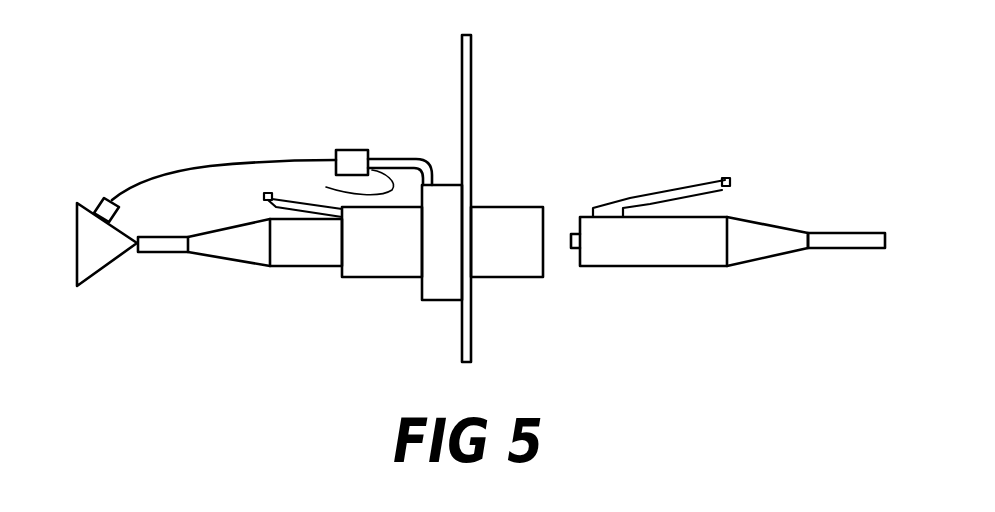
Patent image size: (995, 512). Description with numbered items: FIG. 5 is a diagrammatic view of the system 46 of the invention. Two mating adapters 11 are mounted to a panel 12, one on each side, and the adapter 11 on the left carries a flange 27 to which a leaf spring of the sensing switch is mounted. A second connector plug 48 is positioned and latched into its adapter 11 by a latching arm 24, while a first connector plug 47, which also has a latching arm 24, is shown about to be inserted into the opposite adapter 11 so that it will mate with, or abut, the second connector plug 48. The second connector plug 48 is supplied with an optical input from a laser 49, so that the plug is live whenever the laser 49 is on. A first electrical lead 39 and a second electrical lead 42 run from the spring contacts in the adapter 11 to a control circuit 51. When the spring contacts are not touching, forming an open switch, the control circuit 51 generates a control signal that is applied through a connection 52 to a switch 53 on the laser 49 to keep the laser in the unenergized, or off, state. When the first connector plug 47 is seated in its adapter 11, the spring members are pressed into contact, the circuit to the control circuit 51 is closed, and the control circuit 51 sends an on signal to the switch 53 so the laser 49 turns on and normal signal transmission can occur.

The system 46 is at (303, 70).
The connection 52 is at (208, 166).
The switch 53 is at (102, 198).
The control circuit 51 is at (355, 150).
The first electrical lead 39 is at (394, 158).
The second electrical lead 42 is at (345, 186).
The flange 27 is at (455, 185).
The panel 12 is at (471, 83).
The latching arm 24 is at (264, 197).
The adapter 11 is at (370, 278).
The laser 49 is at (110, 266).
The second connector plug 48 is at (230, 266).
The first connector plug 47 is at (787, 228).